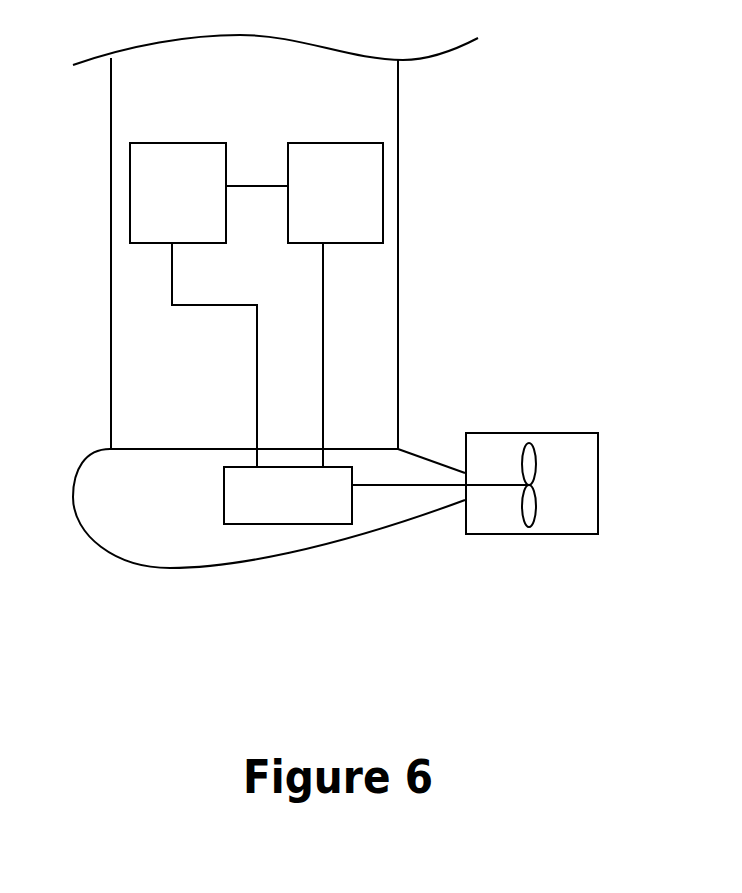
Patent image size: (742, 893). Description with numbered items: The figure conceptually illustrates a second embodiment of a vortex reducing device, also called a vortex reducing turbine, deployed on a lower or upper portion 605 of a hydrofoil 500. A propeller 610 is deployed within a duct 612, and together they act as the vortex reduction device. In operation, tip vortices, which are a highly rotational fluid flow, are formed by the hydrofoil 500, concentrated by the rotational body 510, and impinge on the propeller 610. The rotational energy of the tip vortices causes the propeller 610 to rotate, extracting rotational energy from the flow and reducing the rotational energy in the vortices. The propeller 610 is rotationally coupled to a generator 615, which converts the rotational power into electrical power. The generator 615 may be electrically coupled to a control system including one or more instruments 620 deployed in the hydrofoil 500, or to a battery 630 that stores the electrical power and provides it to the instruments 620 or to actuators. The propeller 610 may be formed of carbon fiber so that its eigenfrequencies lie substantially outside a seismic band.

The hydrofoil 500 is at (229, 128).
The rotational body 510 is at (116, 517).
The lower or upper portion of the hydrofoil 605 is at (582, 251).
The propeller 610 is at (529, 527).
The duct 612 is at (540, 433).
The generator 615 is at (262, 507).
The instruments 620 is at (157, 209).
The battery 630 is at (314, 209).